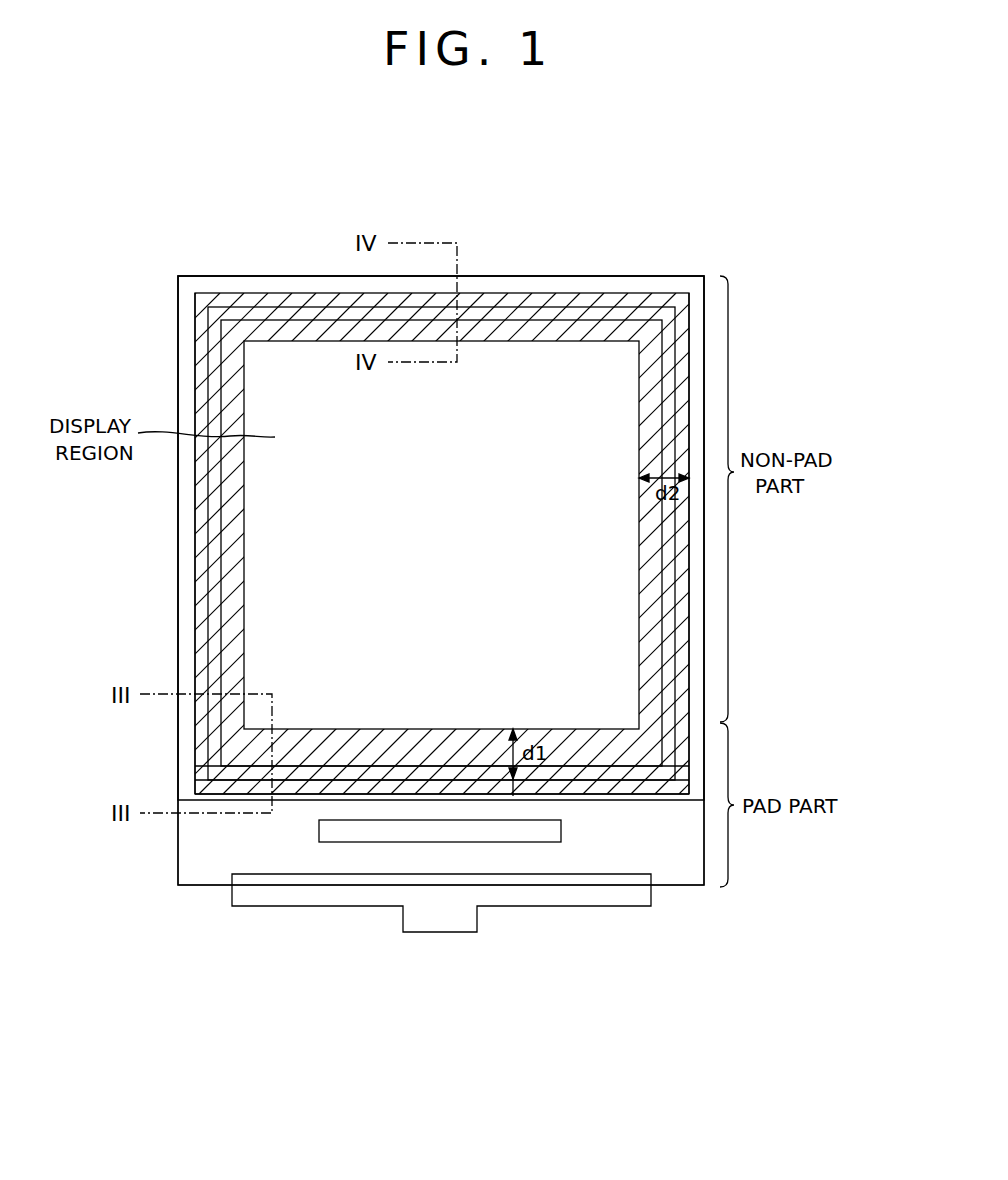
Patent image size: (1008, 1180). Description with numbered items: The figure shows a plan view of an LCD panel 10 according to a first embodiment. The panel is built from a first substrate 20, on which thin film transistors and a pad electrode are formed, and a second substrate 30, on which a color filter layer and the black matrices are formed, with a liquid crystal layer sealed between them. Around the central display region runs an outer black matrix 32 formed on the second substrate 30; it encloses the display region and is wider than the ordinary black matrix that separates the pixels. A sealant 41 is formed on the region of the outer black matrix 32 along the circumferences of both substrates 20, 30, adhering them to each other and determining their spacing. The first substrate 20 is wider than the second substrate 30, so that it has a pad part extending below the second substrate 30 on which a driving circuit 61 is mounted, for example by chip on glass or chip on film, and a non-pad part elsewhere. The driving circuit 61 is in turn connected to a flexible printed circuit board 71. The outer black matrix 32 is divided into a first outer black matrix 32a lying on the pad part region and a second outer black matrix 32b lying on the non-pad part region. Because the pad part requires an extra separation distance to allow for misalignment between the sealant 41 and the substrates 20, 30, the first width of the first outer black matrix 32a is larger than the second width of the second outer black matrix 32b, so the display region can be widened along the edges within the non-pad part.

The LCD panel 10 is at (655, 216).
The first substrate 20 is at (705, 851).
The second substrate 30 is at (680, 802).
The outer black matrix 32 is at (860, 410).
The first outer black matrix 32a is at (690, 749).
The second outer black matrix 32b is at (690, 406).
The sealant 41 is at (215, 508).
The driving circuit 61 is at (330, 843).
The flexible printed circuit board 71 is at (427, 926).